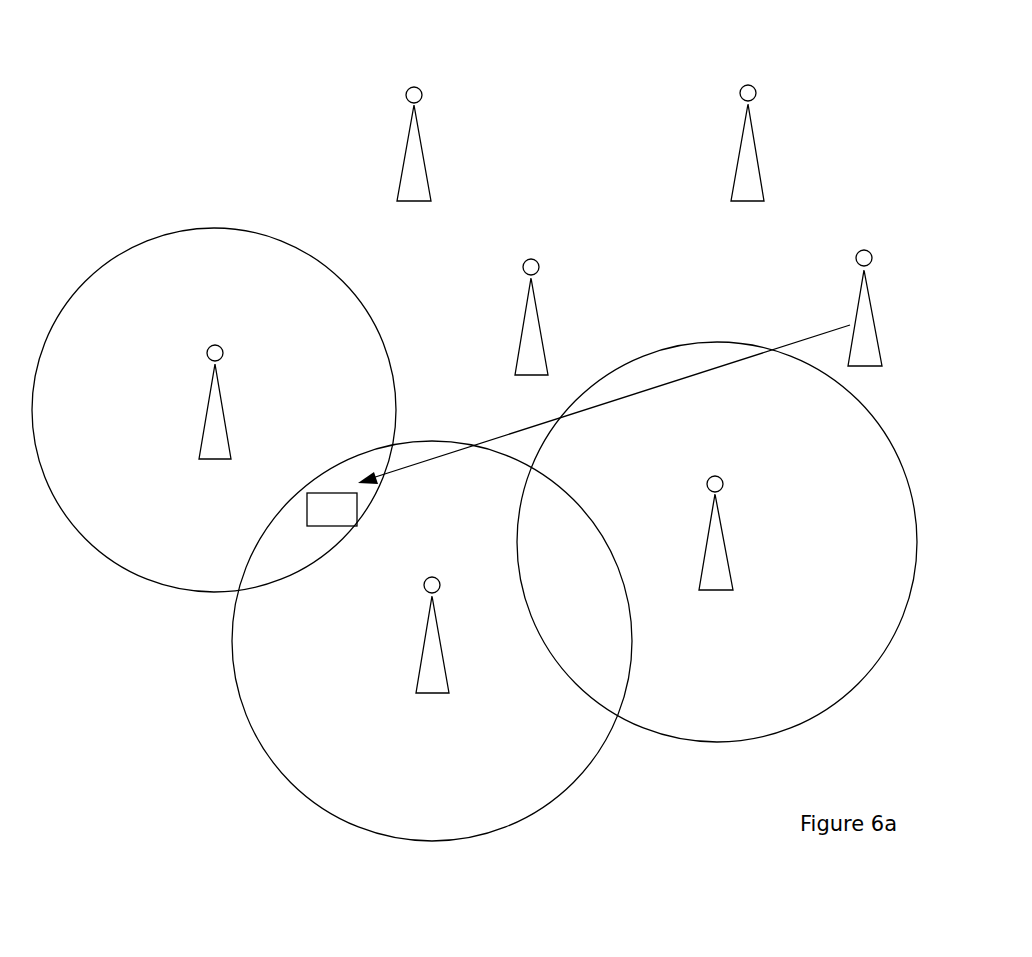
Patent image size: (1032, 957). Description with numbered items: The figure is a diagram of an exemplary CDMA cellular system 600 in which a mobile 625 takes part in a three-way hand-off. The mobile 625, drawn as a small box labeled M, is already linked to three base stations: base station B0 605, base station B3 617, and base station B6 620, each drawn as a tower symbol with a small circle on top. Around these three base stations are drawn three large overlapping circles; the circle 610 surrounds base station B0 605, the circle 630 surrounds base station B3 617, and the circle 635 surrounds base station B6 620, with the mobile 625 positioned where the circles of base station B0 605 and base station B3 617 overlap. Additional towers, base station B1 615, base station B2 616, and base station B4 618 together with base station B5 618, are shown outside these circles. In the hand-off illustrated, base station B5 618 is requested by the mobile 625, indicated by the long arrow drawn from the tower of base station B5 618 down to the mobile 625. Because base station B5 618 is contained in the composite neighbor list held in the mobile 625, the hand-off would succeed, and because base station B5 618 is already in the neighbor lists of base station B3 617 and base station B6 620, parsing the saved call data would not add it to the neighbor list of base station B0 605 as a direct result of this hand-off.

The CDMA cellular system 600 is at (122, 74).
The base station B0 605 is at (207, 393).
The coverage area of BS0 610 is at (205, 228).
The base station BS1 615 is at (402, 133).
The base station BS2 616 is at (521, 310).
The base station B3 617 is at (423, 624).
The base station B5 618 is at (738, 133).
The base station B6 620 is at (706, 525).
The mobile 625 is at (320, 492).
The coverage area of BS3 630 is at (232, 676).
The coverage area of BS6 635 is at (682, 343).